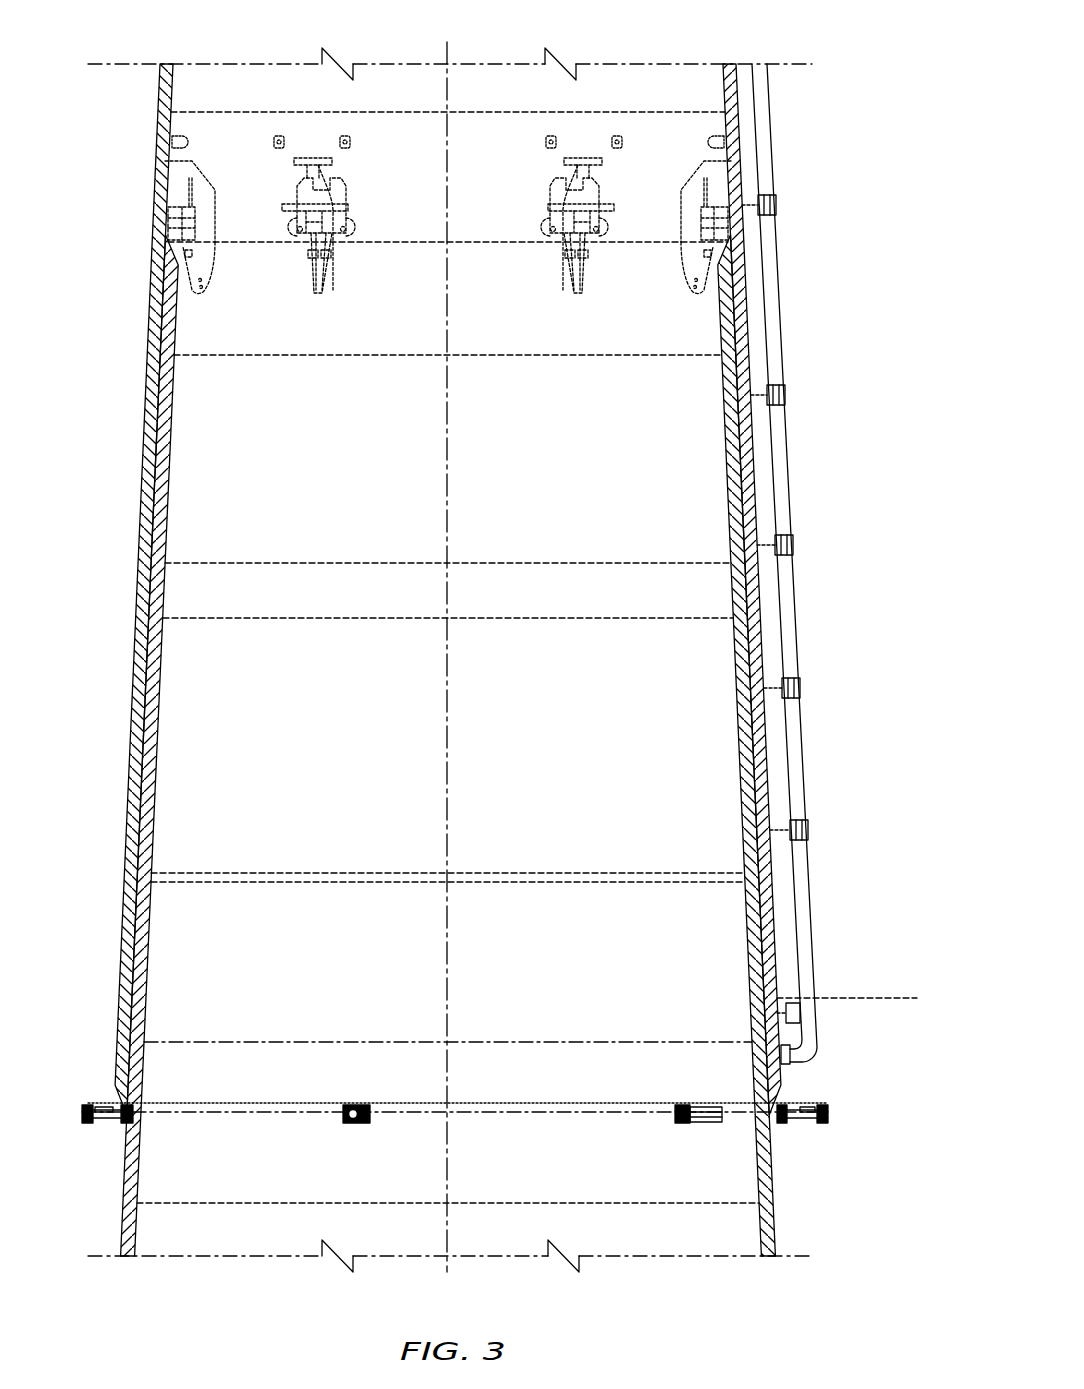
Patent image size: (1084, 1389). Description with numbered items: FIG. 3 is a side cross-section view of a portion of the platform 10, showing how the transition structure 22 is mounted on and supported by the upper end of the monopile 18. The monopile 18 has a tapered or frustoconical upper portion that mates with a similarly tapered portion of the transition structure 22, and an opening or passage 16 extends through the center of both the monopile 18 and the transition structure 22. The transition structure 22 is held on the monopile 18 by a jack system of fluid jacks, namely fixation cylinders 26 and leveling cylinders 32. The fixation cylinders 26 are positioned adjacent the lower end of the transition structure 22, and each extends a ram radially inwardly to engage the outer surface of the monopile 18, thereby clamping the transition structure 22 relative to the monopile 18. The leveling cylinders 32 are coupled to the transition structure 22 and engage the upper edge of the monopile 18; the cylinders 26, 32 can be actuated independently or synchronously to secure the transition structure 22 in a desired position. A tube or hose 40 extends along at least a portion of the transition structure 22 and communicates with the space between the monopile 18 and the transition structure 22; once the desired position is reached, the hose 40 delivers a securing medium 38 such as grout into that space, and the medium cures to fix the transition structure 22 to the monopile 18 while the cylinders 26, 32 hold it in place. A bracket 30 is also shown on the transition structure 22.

The assembly 10 is at (499, 636).
The opening or passage 16 is at (171, 450).
The monopile 18 is at (777, 1228).
The transition structure 22 is at (737, 92).
The fixation cylinders 26 is at (93, 1141).
The wall bracket 30 is at (722, 185).
The leveling cylinders 32 is at (291, 218).
The securing medium 38 is at (792, 589).
The tube or hose 40 is at (805, 792).